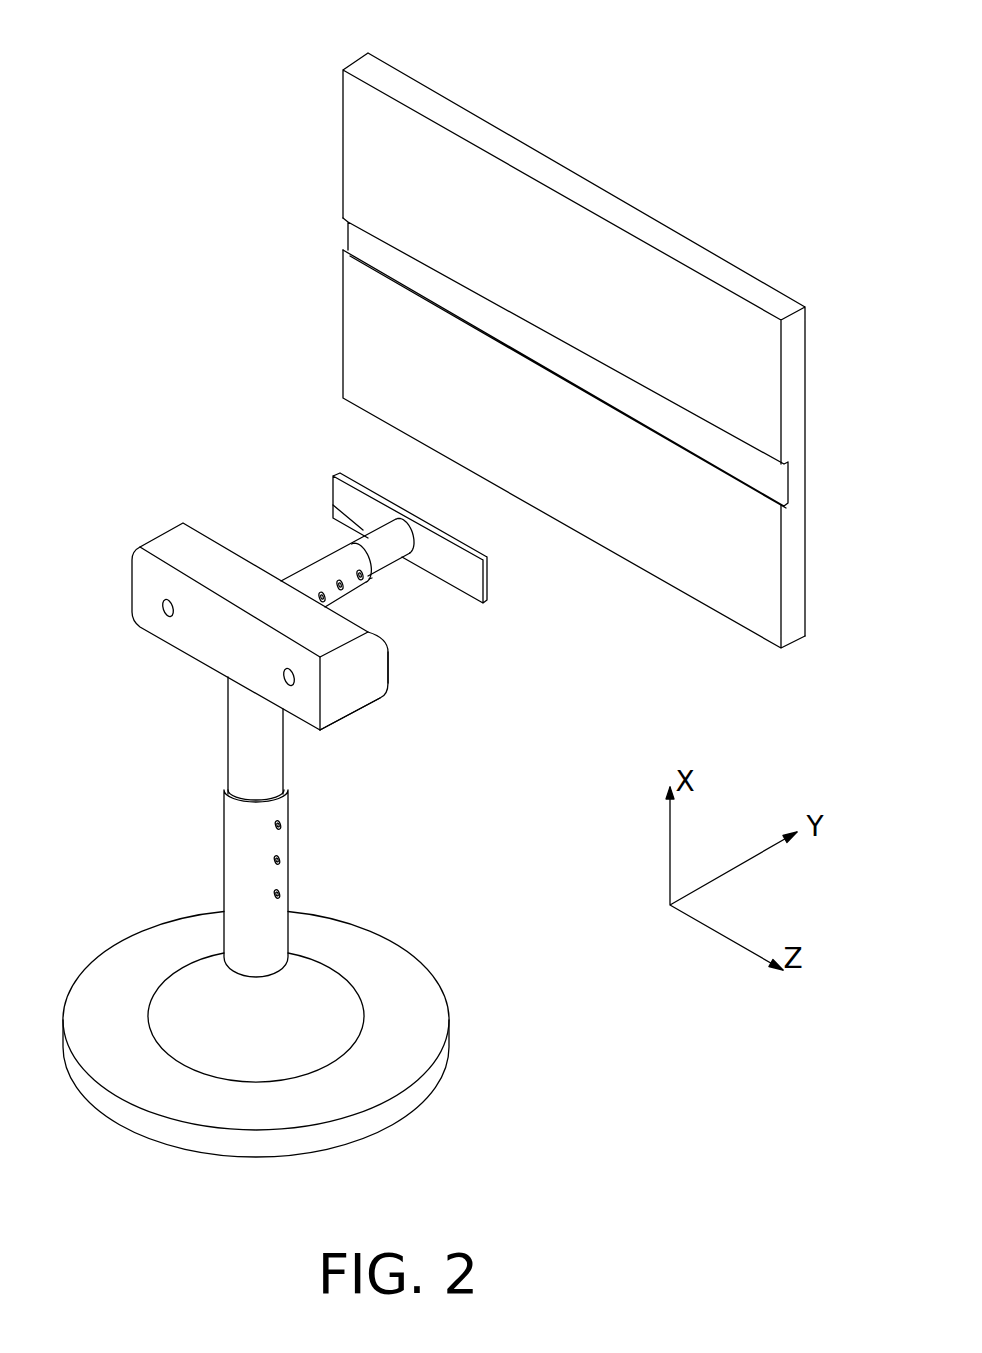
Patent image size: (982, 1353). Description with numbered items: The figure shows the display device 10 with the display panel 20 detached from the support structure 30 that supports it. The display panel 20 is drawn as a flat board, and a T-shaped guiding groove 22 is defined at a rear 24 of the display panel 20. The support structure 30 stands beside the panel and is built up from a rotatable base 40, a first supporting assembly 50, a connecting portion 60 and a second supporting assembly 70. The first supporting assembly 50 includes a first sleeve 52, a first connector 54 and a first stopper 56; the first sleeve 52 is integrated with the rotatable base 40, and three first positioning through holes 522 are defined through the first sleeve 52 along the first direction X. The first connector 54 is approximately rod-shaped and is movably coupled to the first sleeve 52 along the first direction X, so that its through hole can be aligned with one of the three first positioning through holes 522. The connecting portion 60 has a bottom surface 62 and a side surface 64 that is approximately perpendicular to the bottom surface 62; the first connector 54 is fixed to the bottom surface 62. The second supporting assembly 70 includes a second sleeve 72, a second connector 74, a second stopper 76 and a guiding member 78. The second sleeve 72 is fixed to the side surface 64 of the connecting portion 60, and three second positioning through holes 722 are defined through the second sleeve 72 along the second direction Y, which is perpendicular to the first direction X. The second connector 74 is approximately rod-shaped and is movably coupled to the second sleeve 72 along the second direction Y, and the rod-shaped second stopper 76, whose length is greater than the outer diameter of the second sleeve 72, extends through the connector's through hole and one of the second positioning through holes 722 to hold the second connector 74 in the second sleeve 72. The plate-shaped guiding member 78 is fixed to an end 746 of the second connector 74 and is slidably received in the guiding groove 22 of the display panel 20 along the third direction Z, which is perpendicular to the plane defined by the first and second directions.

The display device 10 is at (165, 65).
The display panel 20 is at (609, 350).
The guiding groove 22 is at (765, 471).
The rear 24 is at (752, 366).
The support structure 30 is at (58, 460).
The rotatable base 40 is at (180, 945).
The first supporting assembly 50 is at (114, 699).
The first sleeve 52 is at (248, 843).
The first positioning through holes 522 is at (285, 893).
The first connector 54 is at (250, 742).
The first stopper 56 is at (287, 823).
The connecting portion 60 is at (192, 625).
The bottom surface 62 is at (368, 726).
The side surface 64 is at (398, 670).
The second supporting assembly 70 is at (126, 431).
The second sleeve 72 is at (320, 567).
The second positioning through holes 722 is at (364, 578).
The second connector 74 is at (333, 505).
The end 746 is at (397, 530).
The second stopper 76 is at (372, 578).
The guiding member 78 is at (338, 473).